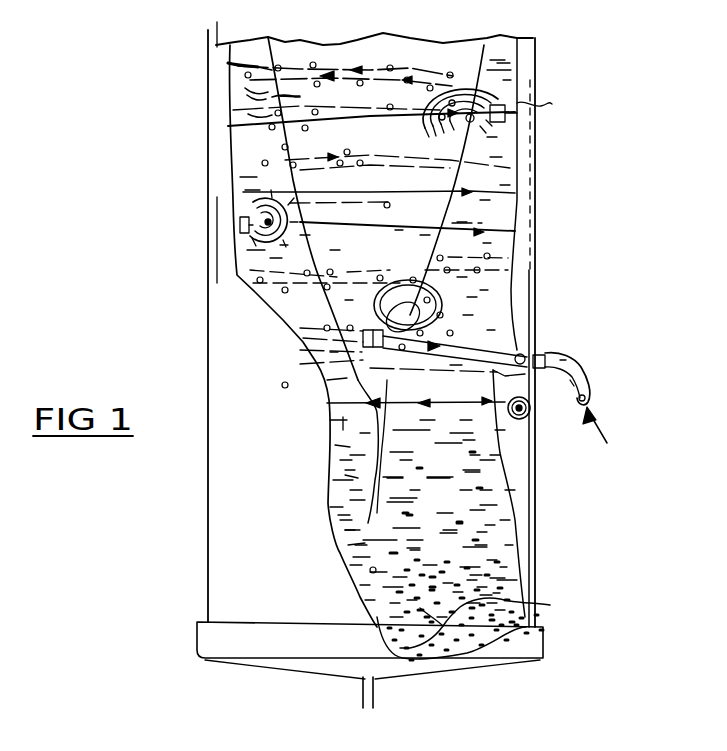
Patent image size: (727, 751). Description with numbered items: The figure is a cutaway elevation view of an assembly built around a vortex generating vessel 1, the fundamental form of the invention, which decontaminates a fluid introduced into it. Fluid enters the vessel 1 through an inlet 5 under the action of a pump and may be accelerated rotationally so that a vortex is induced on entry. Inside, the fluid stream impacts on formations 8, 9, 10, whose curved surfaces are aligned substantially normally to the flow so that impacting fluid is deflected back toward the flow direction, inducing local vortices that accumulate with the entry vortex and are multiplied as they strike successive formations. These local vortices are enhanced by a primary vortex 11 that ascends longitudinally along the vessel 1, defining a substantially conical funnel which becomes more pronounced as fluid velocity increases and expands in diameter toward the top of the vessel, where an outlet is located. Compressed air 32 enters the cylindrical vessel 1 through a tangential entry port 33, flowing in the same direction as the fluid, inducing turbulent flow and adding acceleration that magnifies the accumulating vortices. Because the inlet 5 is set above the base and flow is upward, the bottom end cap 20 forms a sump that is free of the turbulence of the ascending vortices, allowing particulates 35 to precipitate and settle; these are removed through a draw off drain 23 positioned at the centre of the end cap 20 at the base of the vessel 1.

The vortex generating vessel 1 is at (204, 484).
The inlet 5 is at (527, 427).
The formation 8 is at (330, 372).
The formation 9 is at (243, 237).
The formation 10 is at (507, 110).
The primary vortex spiral 11 is at (270, 105).
The bottom end cap 20 is at (280, 638).
The draw off drain 23 is at (378, 695).
The compressed air 32 is at (611, 435).
The tangential entry port 33 is at (543, 348).
The particulates 35 is at (550, 605).